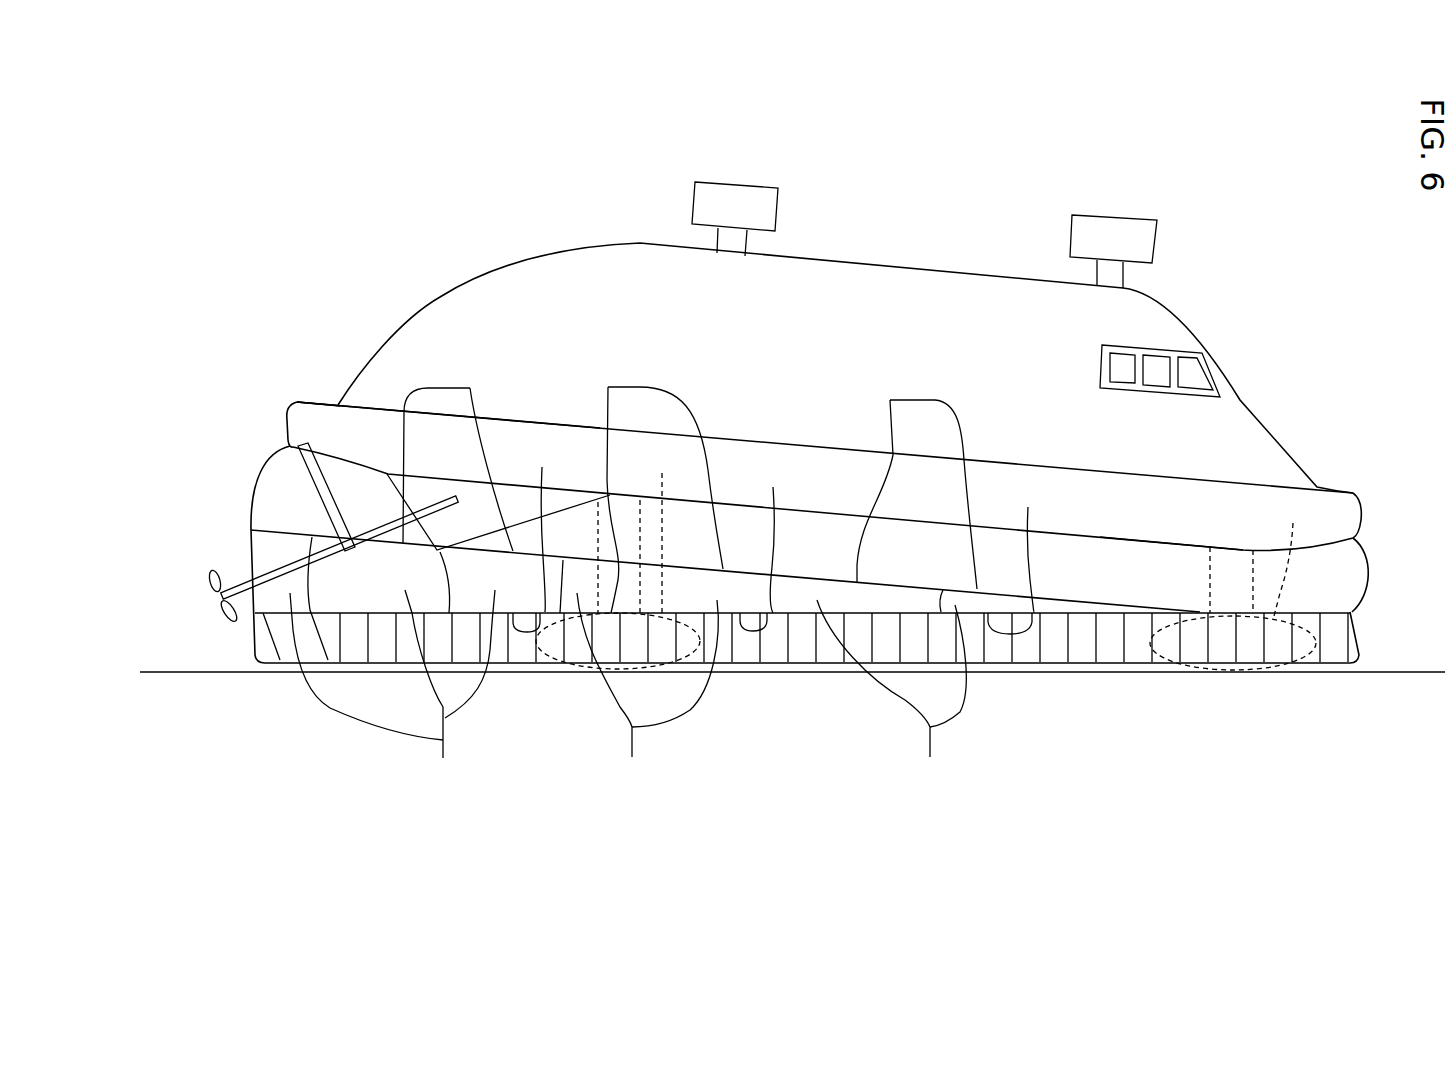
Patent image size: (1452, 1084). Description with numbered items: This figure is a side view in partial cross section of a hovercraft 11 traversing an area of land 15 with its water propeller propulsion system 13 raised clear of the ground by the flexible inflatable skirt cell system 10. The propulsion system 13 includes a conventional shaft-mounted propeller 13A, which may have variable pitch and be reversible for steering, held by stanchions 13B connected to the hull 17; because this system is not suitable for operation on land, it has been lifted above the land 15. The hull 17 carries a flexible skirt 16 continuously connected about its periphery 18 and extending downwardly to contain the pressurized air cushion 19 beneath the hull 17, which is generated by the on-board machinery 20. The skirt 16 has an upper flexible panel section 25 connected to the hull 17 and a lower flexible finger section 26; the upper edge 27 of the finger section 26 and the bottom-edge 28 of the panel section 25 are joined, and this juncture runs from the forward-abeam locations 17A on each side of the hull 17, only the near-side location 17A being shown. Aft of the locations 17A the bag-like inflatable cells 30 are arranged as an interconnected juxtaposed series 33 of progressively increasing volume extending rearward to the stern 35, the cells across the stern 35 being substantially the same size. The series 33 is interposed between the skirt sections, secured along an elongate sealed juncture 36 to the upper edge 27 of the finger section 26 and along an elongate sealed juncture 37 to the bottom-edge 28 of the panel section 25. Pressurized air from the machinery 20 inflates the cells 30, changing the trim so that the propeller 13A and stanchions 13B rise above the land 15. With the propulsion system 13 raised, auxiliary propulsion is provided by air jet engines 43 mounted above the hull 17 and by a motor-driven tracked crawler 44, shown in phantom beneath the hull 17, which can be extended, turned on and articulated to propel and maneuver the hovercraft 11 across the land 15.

The flexible inflatable skirt cell system 10 is at (1393, 467).
The hovercraft 11 is at (1230, 353).
The water propeller propulsion system 13 is at (366, 455).
The propeller 13A is at (215, 596).
The stanchions 13B is at (337, 488).
The land 15 is at (163, 672).
The flexible skirt 16 is at (235, 518).
The hull 17 is at (1122, 522).
The forward-abeam location 17A is at (1202, 605).
The periphery 18 is at (300, 393).
The air cushion 19 is at (276, 666).
The on-board machinery 20 is at (353, 650).
The upper flexible panel section 25 is at (245, 450).
The lower flexible finger section 26 is at (1360, 637).
The upper edge 27 is at (781, 524).
The bottom-edge 28 is at (470, 388).
The inflatable cells 30 is at (683, 692).
The interconnected juxtaposed series 33 is at (683, 692).
The stern 35 is at (275, 412).
The sealed juncture 36 is at (781, 524).
The sealed juncture 37 is at (875, 543).
The auxiliary air jet engines 43 is at (778, 211).
The tracked crawlers 44 is at (926, 559).